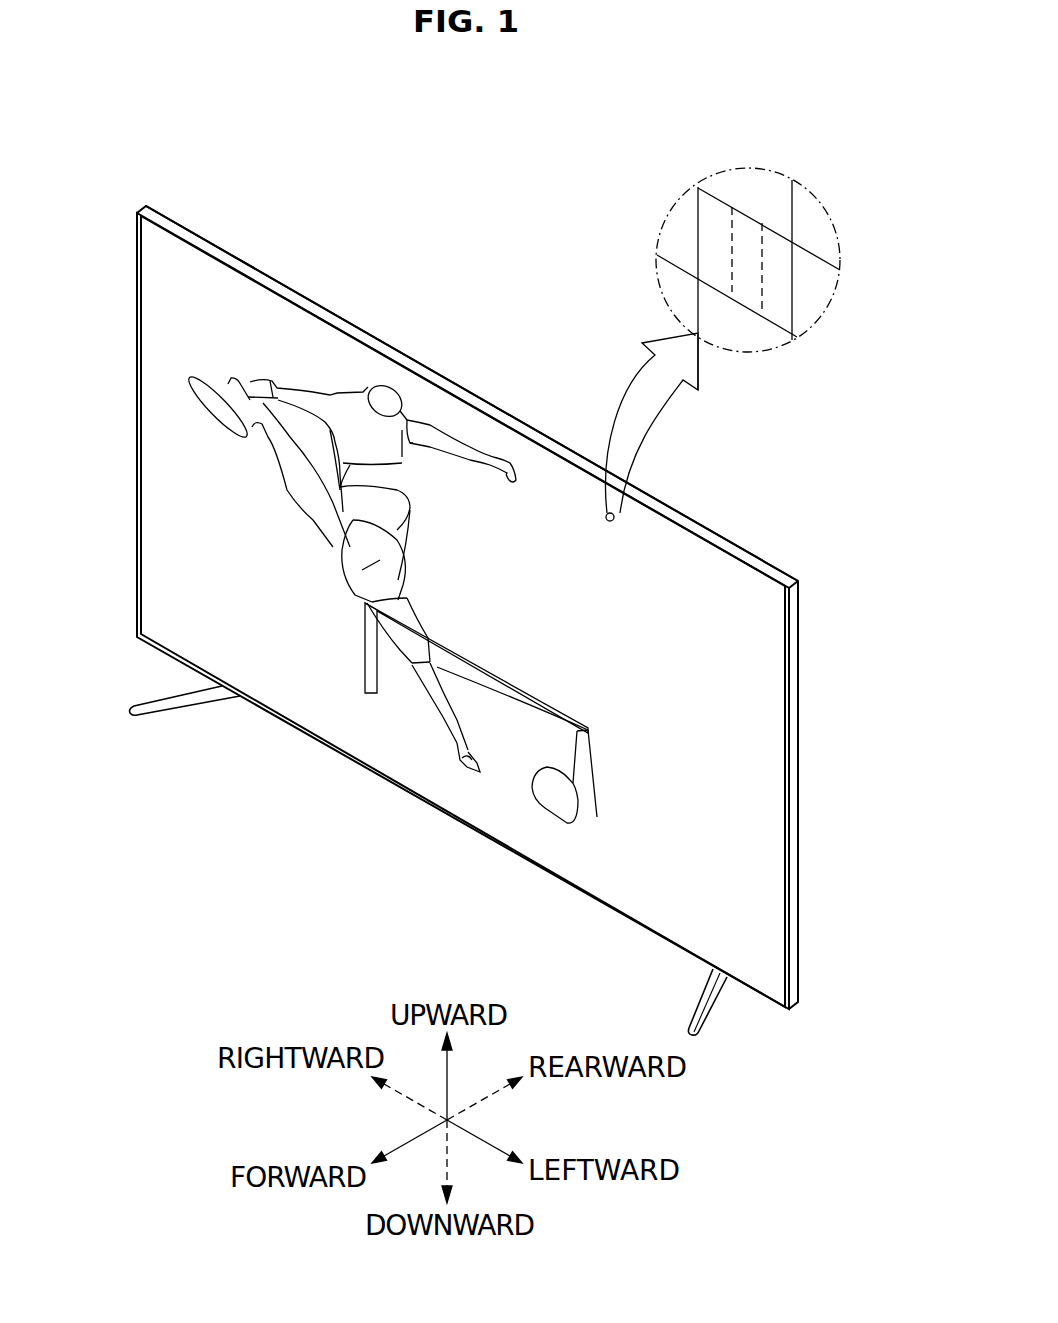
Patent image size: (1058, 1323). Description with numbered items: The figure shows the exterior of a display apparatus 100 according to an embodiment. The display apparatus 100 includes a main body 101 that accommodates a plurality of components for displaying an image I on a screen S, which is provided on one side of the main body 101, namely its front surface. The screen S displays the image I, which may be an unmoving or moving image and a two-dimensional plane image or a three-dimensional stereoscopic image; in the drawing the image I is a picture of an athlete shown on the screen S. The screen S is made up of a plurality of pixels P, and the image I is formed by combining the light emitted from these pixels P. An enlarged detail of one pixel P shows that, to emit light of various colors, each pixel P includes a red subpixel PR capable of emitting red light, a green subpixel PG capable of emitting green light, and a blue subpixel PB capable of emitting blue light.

The display apparatus 100 is at (302, 170).
The main body 101 is at (461, 374).
The screen S is at (147, 561).
The image I is at (605, 727).
The pixel P is at (743, 222).
The red subpixel PR is at (708, 218).
The green subpixel PG is at (737, 280).
The blue subpixel PB is at (783, 300).